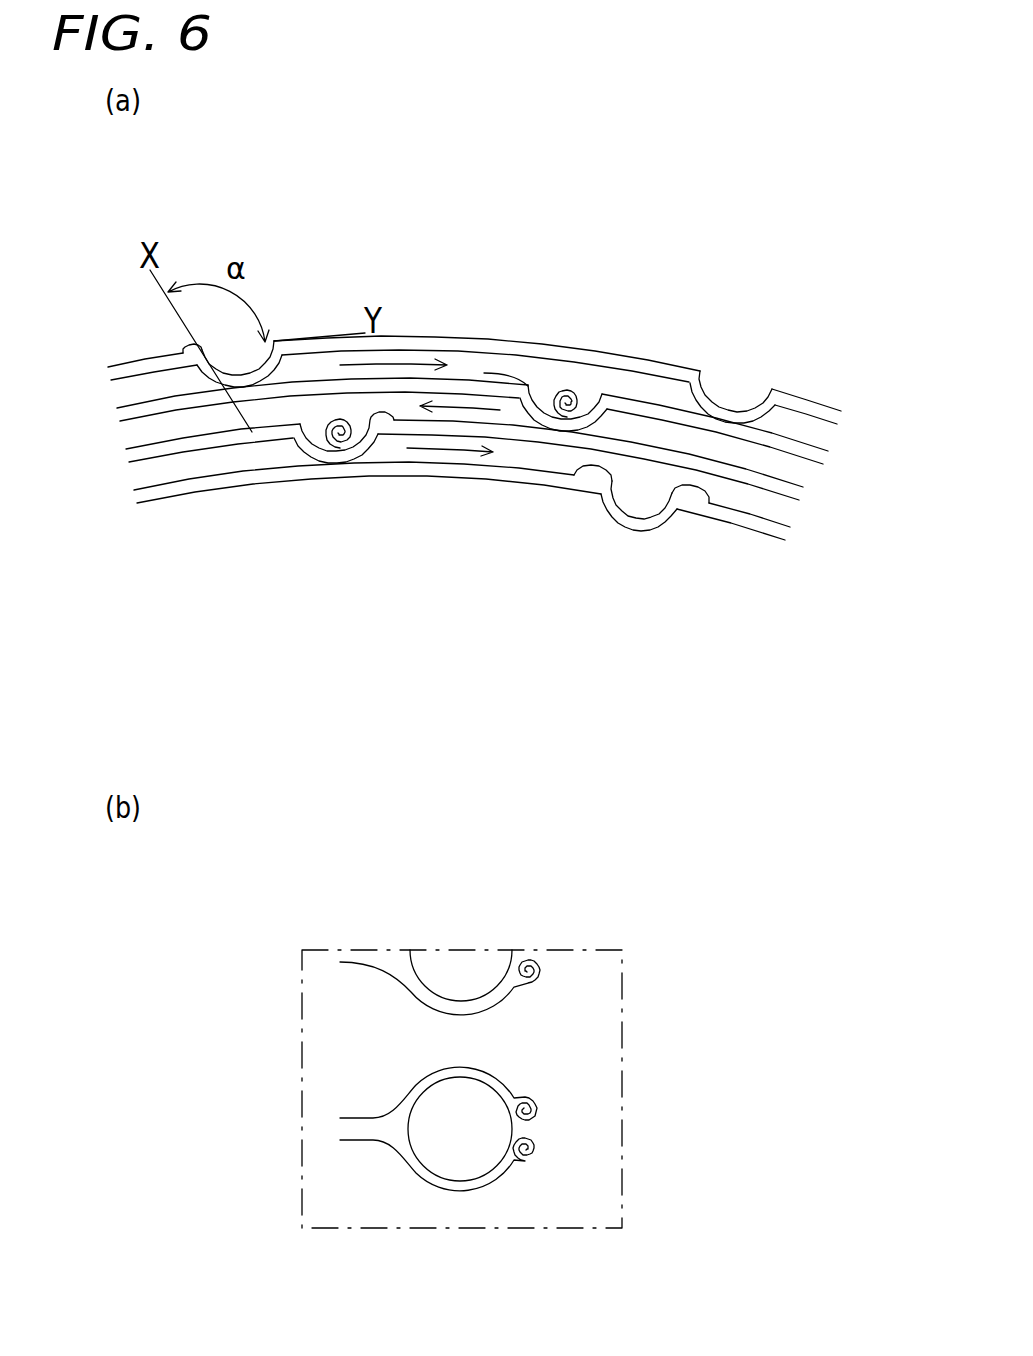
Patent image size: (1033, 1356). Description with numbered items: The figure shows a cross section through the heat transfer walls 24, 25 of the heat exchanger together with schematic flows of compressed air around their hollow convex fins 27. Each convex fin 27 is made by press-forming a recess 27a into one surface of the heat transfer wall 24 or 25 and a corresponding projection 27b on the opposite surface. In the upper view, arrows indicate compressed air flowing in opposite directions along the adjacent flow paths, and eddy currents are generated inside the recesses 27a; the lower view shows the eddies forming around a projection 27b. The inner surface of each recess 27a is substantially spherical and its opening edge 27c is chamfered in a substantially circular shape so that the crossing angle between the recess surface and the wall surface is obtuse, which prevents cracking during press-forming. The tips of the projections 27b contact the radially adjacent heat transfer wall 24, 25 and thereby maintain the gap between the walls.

The heat transfer wall 24 is at (640, 408).
The heat transfer wall 25 is at (582, 357).
The hollow convex fin 27 is at (396, 809).
The recess 27a is at (700, 497).
The projection 27b is at (617, 500).
The opening edge 27c is at (598, 473).